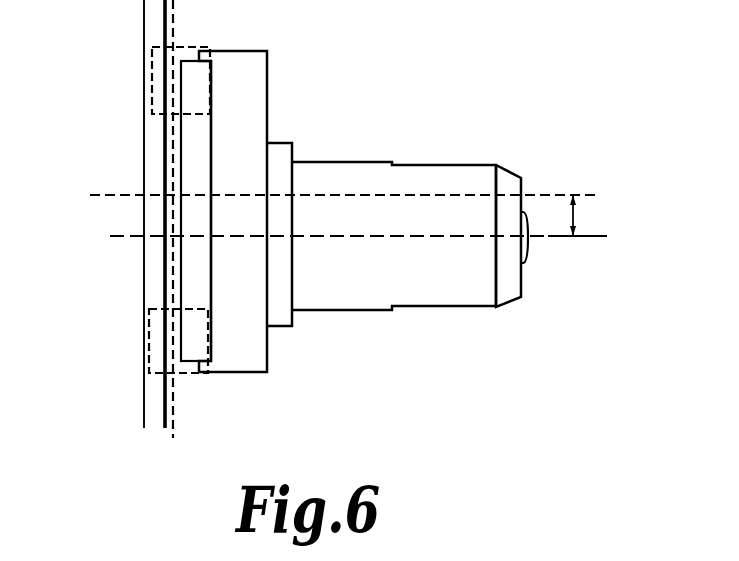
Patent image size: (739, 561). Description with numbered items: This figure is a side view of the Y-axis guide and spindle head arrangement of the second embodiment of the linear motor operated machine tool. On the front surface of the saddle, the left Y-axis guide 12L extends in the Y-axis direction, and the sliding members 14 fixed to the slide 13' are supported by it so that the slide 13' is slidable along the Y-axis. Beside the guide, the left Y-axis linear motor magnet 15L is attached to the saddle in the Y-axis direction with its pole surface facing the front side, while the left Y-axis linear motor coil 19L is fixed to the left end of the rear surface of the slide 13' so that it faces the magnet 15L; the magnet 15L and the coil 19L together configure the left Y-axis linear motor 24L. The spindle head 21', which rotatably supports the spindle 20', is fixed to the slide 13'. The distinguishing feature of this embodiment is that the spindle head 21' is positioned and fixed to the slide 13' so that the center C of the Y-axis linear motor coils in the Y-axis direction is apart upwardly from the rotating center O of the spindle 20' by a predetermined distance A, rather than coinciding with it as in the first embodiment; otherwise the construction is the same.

The Y-axis linear motor 24L is at (135, 134).
The left Y-axis linear motor magnet 15L is at (145, 27).
The left Y-axis guide 12L is at (173, 398).
The sliding members 14 is at (147, 341).
The left Y-axis linear motor coil 19L is at (197, 141).
The slide 13' is at (264, 211).
The spindle head 21' is at (406, 201).
The spindle 20' is at (559, 268).
The center of the Y-axis linear motor coils C is at (542, 195).
The rotating center of the spindle O is at (548, 238).
The predetermined distance A is at (583, 215).